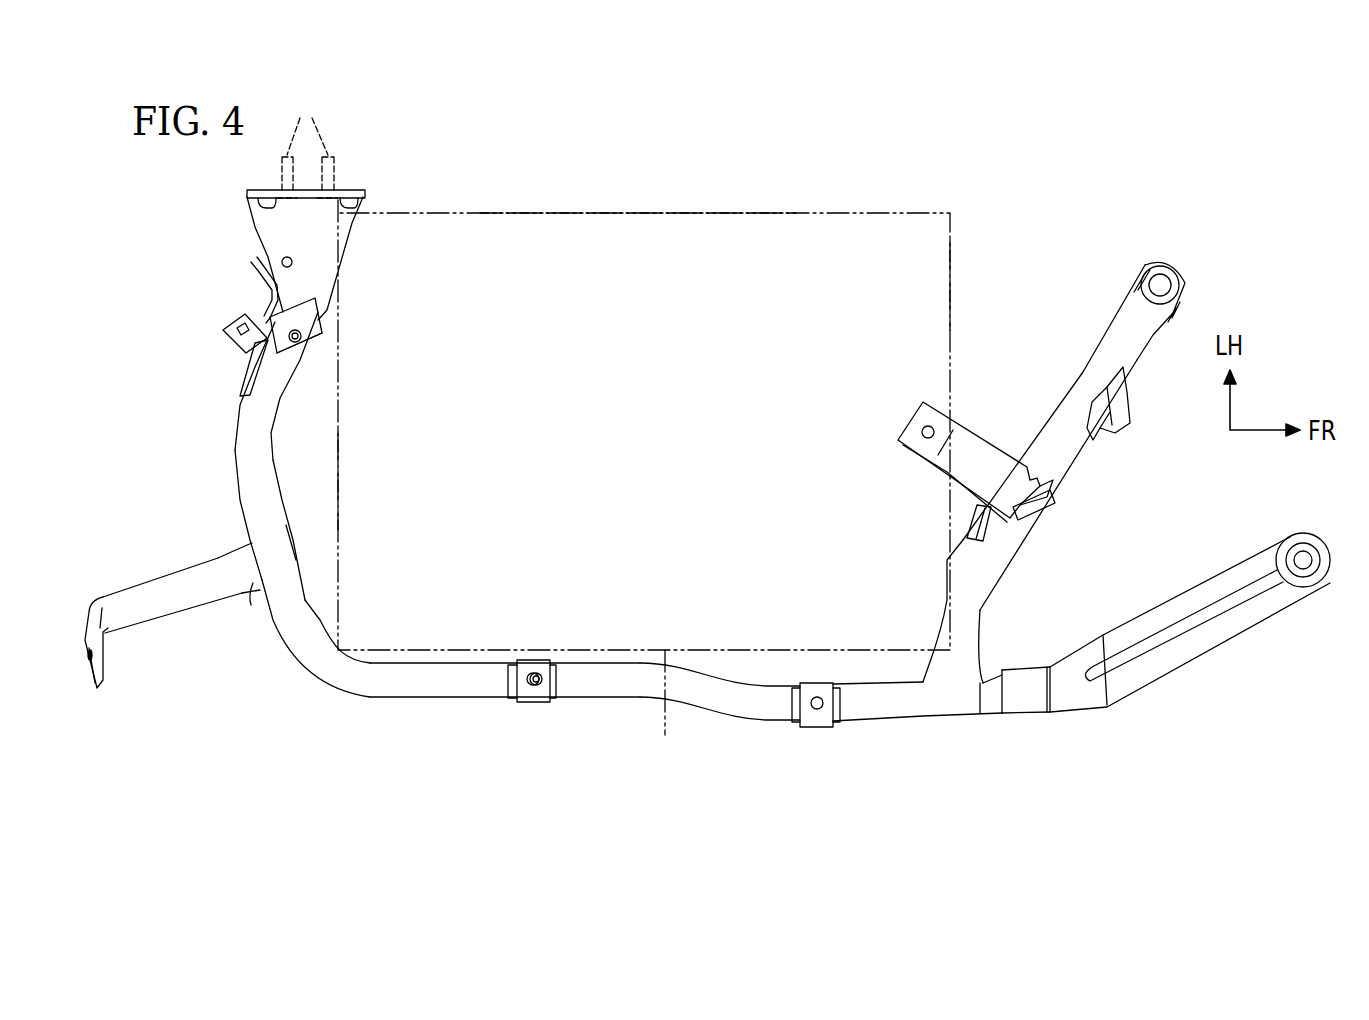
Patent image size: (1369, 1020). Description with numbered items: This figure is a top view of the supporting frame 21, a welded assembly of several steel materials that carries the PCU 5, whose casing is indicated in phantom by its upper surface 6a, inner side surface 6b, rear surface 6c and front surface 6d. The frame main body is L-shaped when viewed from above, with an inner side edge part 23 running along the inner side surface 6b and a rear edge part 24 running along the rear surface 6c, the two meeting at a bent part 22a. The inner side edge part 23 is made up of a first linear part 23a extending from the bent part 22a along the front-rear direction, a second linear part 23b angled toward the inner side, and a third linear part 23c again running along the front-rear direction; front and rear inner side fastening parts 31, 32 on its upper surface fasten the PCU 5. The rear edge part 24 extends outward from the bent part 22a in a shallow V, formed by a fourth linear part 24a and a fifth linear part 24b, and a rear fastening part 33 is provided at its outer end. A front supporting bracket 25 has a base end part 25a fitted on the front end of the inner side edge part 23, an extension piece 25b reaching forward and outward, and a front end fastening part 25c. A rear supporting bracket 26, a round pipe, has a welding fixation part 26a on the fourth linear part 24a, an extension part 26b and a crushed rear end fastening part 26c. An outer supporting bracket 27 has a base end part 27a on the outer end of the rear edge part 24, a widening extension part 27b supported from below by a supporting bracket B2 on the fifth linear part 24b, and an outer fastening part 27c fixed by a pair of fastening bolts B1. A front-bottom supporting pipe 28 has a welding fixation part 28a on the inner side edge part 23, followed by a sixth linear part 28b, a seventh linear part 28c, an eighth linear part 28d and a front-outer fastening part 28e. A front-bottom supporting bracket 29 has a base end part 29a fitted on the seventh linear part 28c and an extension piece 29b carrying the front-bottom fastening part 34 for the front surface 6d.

The PCU 5 is at (932, 208).
The upper surface 6a is at (678, 257).
The inner side surface 6b is at (658, 708).
The rear surface 6c is at (335, 493).
The front surface 6d is at (957, 287).
The supporting frame 21 is at (1105, 178).
The bent part 22a is at (323, 675).
The inner side edge part 23 is at (686, 681).
The first linear part 23a is at (467, 695).
The second linear part 23b is at (718, 710).
The third linear part 23c is at (915, 712).
The rear edge part 24 is at (233, 516).
The fourth linear part 24a is at (257, 520).
The fifth linear part 24b is at (263, 373).
The front supporting bracket 25 is at (1177, 660).
The base end part 25a is at (1040, 700).
The extension piece 25b is at (1205, 642).
The front end fastening part 25c is at (1325, 580).
The rear supporting bracket 26 is at (160, 643).
The welding fixation part 26a is at (253, 583).
The extension part 26b is at (188, 598).
The rear end fastening part 26c is at (83, 647).
The outer supporting bracket 27 is at (303, 211).
The base end part 27a is at (317, 322).
The extension part 27b is at (328, 270).
The outer fastening part 27c is at (312, 186).
The front-bottom supporting pipe 28 is at (1010, 520).
The welding fixation part 28a is at (960, 707).
The sixth linear part 28b is at (943, 630).
The seventh linear part 28c is at (980, 547).
The eighth linear part 28d is at (1080, 397).
The front-outer fastening part 28e is at (1137, 293).
The front-bottom supporting bracket 29 is at (1018, 434).
The base end part 29a is at (1017, 488).
The extension piece 29b is at (990, 462).
The inner side fastening part 31 is at (815, 717).
The inner side fastening part 32 is at (535, 697).
The rear fastening part 33 is at (305, 357).
The front-bottom fastening part 34 is at (925, 413).
The fastening bolts B1 is at (308, 137).
The supporting bracket B2 is at (262, 283).